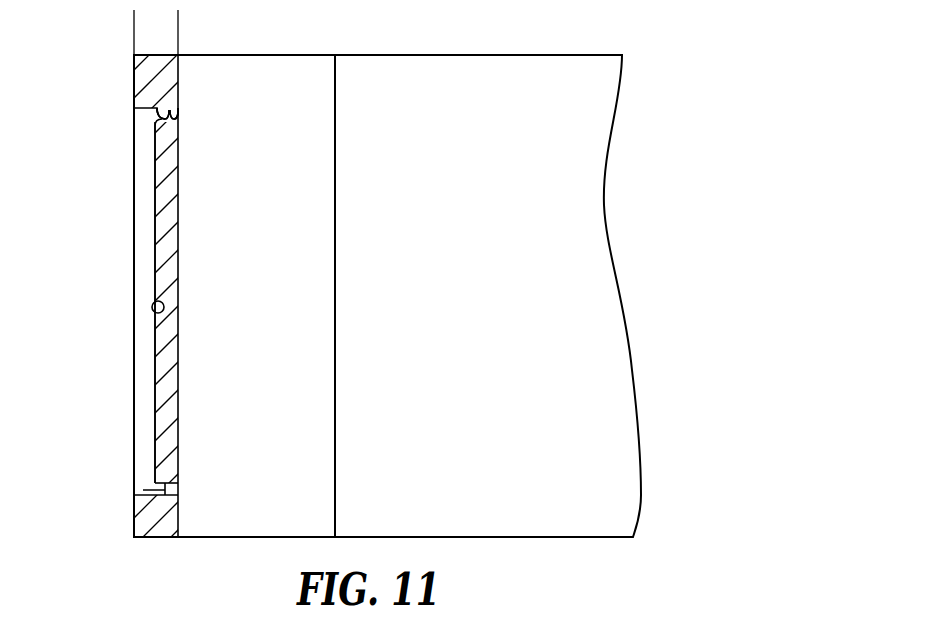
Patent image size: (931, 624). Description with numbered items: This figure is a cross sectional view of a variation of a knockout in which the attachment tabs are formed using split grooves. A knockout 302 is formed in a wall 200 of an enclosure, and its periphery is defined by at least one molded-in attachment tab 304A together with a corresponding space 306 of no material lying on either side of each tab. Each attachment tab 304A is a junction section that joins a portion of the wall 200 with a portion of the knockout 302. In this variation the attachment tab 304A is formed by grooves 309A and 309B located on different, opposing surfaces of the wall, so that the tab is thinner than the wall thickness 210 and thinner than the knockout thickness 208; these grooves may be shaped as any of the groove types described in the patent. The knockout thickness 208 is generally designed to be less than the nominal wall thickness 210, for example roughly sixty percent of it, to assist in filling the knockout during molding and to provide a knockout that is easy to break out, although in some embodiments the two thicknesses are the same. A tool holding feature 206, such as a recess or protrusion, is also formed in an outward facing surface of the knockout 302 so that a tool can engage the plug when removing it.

The wall 200 is at (140, 512).
The tool holding feature 206 is at (152, 305).
The knockout thickness 208 is at (215, 241).
The wall thickness 210 is at (97, 19).
The knockout 302 is at (155, 353).
The attachment tab 304A is at (172, 124).
The space 306 is at (155, 487).
The groove 309A is at (152, 115).
The groove 309B is at (178, 116).